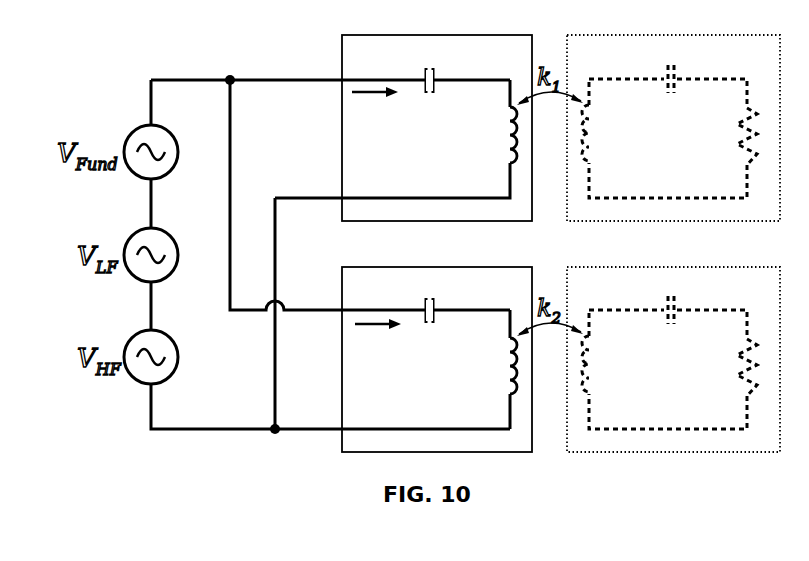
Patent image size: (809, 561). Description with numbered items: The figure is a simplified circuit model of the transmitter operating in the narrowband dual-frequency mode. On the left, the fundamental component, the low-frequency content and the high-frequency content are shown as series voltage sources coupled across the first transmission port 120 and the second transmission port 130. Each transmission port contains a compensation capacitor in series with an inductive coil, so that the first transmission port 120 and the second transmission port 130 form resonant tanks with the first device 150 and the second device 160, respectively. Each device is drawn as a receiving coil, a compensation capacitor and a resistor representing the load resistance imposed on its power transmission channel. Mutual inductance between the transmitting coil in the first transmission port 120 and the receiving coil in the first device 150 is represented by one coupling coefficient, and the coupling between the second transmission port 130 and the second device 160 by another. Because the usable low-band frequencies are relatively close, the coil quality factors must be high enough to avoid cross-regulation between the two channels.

The first transmission port 120 is at (523, 67).
The second transmission port 130 is at (523, 298).
The first device 150 is at (770, 66).
The second device 160 is at (770, 297).